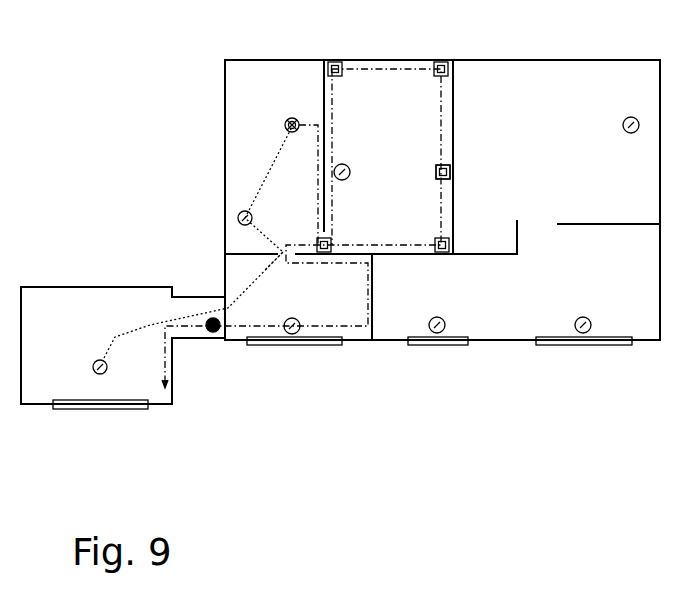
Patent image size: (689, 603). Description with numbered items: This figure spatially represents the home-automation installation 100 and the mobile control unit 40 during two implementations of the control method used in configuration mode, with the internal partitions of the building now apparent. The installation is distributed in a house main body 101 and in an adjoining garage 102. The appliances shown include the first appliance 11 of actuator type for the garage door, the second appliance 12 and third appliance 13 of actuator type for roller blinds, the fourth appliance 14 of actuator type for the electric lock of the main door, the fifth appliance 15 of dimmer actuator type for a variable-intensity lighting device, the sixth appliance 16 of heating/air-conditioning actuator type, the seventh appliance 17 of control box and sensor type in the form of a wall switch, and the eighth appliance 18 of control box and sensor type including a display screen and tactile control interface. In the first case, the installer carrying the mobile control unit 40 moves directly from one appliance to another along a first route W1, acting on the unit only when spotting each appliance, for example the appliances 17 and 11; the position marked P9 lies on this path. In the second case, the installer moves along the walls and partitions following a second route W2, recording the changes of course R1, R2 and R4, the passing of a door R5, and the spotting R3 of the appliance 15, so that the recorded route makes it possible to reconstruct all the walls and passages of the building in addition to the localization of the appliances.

The home-automation installation 100 is at (336, 244).
The house main body 101 is at (225, 110).
The garage 102 is at (66, 286).
The first appliance 11 is at (97, 374).
The second appliance 12 is at (291, 345).
The third appliance 13 is at (583, 345).
The fourth appliance 14 is at (437, 345).
The fifth appliance 15 is at (630, 133).
The sixth appliance 16 is at (436, 176).
The seventh appliance 17 is at (238, 218).
The eighth appliance 18 is at (348, 167).
The mobile control unit 40 is at (208, 334).
The position P9 is at (288, 117).
The change of course R1 is at (339, 62).
The change of course R2 is at (447, 62).
The spotting R3 is at (450, 165).
The change of course R4 is at (449, 238).
The passing of a door R5 is at (332, 238).
The first route W1 is at (146, 323).
The second route W2 is at (445, 98).